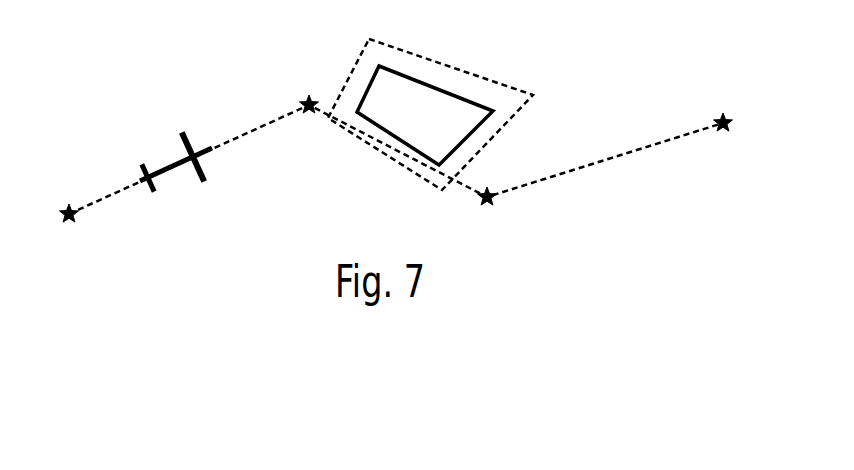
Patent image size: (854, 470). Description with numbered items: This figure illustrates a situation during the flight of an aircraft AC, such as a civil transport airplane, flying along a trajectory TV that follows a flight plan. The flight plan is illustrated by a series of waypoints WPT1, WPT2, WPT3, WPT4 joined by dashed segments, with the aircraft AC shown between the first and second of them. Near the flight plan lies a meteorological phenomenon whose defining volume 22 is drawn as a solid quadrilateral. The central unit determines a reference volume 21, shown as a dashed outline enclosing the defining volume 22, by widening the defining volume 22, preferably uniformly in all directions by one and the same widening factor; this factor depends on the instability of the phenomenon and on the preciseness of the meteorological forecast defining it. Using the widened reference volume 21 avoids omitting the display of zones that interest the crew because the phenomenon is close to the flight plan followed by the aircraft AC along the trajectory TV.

The reference volume 21 is at (428, 62).
The defining volume 22 is at (472, 102).
The trajectory TV is at (98, 188).
The aircraft AC is at (177, 170).
The waypoint WPT1 is at (70, 230).
The waypoint WPT2 is at (307, 89).
The waypoint WPT3 is at (486, 212).
The waypoint WPT4 is at (722, 108).